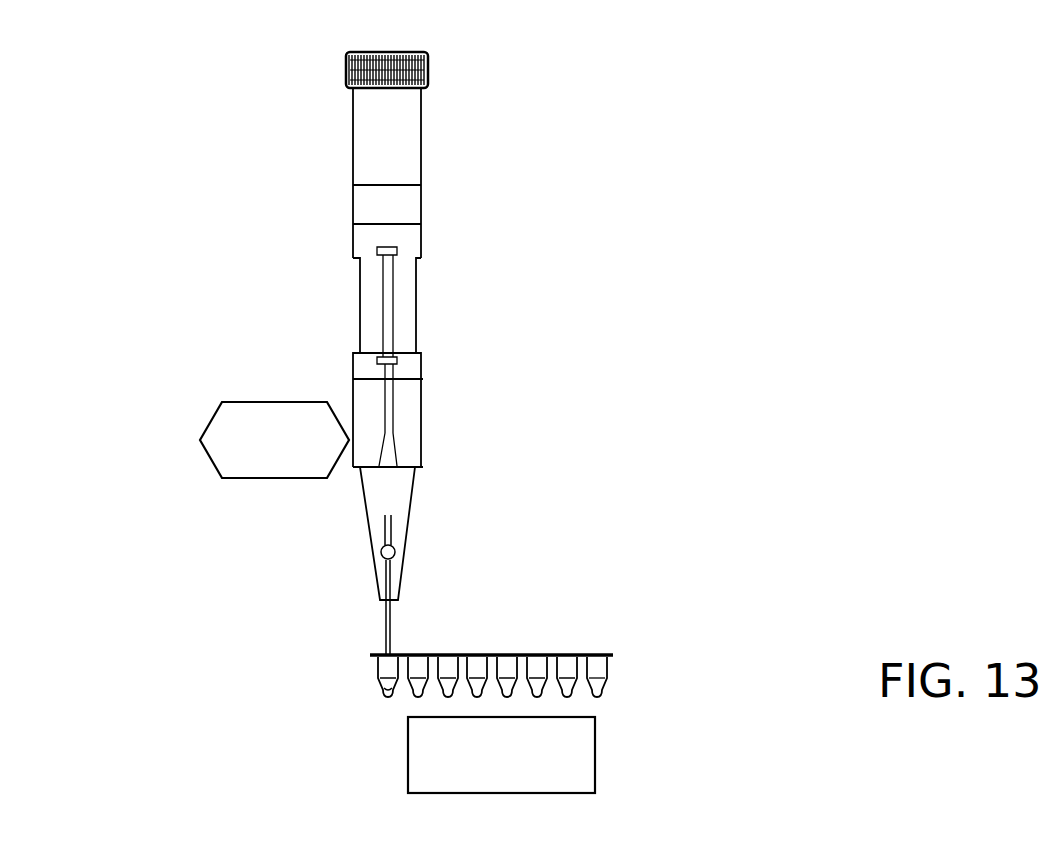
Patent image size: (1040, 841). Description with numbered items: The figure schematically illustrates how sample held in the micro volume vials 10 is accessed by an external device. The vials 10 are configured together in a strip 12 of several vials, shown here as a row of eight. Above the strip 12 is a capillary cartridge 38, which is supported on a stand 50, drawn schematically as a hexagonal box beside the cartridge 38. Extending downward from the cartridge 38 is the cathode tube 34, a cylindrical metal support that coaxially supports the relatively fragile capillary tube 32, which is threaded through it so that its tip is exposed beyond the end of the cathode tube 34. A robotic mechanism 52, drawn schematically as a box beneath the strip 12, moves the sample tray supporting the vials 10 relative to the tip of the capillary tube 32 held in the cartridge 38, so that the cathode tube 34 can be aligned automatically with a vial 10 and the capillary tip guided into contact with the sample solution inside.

The capillary cartridge 38 is at (428, 175).
The cathode tube 34 is at (393, 626).
The strip 12 is at (600, 650).
The micro volume vial 10 is at (607, 667).
The capillary tube 32 is at (385, 688).
The stand 50 is at (292, 461).
The robotic mechanism 52 is at (514, 779).